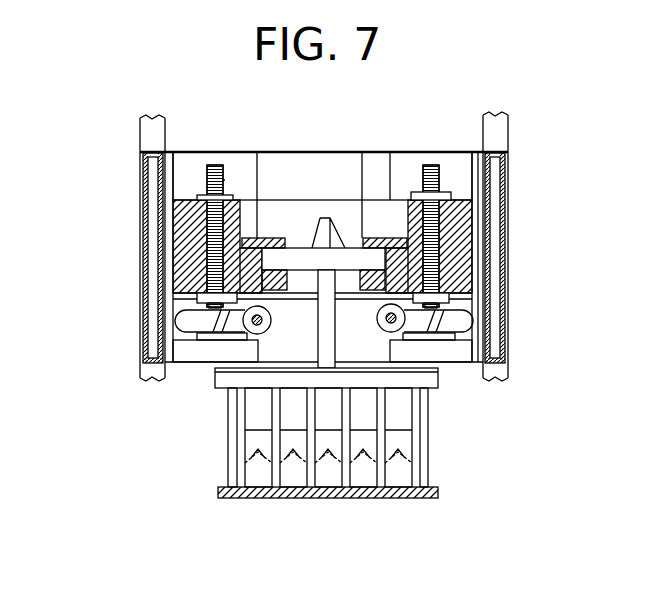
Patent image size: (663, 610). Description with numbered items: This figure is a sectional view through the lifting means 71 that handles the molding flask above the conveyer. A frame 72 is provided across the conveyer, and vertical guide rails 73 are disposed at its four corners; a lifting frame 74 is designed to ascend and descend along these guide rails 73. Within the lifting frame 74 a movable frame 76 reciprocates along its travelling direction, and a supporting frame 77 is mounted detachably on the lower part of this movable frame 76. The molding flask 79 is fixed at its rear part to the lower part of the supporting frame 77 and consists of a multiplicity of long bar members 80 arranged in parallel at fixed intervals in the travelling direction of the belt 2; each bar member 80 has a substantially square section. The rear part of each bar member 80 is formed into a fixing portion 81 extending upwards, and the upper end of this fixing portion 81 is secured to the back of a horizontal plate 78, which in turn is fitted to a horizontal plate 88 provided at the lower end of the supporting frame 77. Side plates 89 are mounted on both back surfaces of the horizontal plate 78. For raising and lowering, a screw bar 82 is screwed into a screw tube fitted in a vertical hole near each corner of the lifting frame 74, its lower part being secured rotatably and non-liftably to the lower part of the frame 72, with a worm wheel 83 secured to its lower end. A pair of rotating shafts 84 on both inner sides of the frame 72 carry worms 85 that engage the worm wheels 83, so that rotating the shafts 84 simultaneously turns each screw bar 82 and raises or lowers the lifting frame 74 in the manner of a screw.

The belt 2 is at (397, 500).
The means 71 is at (403, 146).
The frame 72 is at (142, 188).
The vertical guide rails 73 is at (176, 170).
The lifting frame 74 is at (468, 219).
The movable frame 76 is at (297, 258).
The supporting frame 77 is at (331, 313).
The horizontal plate 78 is at (357, 391).
The molding flask 79 is at (418, 463).
The long bar members 80 is at (290, 472).
The fixing portion 81 is at (404, 413).
The screw bar 82 is at (423, 180).
The worm wheel 83 is at (190, 321).
The rotating shafts 84 is at (256, 320).
The worm 85 is at (262, 335).
The horizontal plate 88 is at (440, 372).
The side plates 89 is at (230, 448).